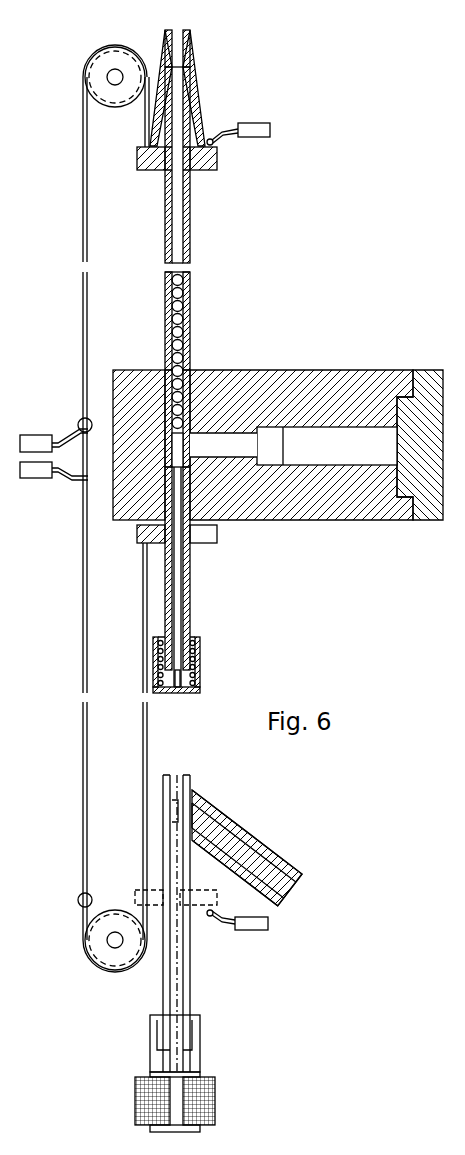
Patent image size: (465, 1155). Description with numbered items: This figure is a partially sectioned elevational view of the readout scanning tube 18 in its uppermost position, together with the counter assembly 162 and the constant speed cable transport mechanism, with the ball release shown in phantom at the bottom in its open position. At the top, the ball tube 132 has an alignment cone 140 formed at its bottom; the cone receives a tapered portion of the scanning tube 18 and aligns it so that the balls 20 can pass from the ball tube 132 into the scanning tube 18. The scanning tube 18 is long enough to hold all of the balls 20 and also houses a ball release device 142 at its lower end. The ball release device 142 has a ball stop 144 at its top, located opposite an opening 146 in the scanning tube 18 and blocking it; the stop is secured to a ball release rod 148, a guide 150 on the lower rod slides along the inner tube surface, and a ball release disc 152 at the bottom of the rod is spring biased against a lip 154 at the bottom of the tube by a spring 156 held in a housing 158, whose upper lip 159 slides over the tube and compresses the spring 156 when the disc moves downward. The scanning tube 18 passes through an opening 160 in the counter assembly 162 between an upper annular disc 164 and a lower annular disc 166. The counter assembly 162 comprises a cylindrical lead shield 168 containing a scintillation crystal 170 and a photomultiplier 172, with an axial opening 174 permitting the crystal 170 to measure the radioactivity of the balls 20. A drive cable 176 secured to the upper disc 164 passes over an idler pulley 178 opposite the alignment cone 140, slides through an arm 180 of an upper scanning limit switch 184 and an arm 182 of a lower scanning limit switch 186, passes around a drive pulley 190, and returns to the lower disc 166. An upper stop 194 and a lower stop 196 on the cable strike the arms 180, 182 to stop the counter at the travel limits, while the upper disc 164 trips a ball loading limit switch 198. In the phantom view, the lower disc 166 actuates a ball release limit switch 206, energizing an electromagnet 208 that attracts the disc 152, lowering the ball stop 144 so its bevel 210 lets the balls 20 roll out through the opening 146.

The readout scanning tube 18 is at (192, 249).
The balls 20 is at (192, 315).
The ball tube 132 is at (192, 35).
The alignment cone 140 is at (193, 80).
The ball release device 142 is at (182, 588).
The ball stop 144 is at (179, 453).
The opening 146 is at (187, 440).
The ball release rod 148 is at (177, 565).
The guide 150 is at (177, 638).
The ball release disc 152 is at (188, 694).
The lip 154 is at (196, 683).
The spring 156 is at (192, 652).
The housing 158 is at (200, 668).
The lip 159 is at (195, 636).
The opening 160 is at (202, 375).
The counter assembly 162 is at (388, 370).
The upper annular disc 164 is at (218, 163).
The lower annular disc 166 is at (137, 538).
The cylindrical lead shield 168 is at (297, 372).
The scintillation crystal 170 is at (271, 467).
The photomultiplier 172 is at (350, 467).
The axial opening 174 is at (228, 380).
The drive cable 176 is at (88, 224).
The idler pulley 178 is at (115, 50).
The arm 180 is at (67, 440).
The arm 182 is at (65, 480).
The upper scanning limit switch 184 is at (40, 419).
The lower scanning limit switch 186 is at (32, 478).
The drive pulley 190 is at (105, 960).
The upper stop 194 is at (81, 420).
The lower stop 196 is at (87, 896).
The ball loading limit switch 198 is at (272, 130).
The ball release limit switch 206 is at (245, 932).
The electromagnet 208 is at (215, 1106).
The bevel 210 is at (178, 806).